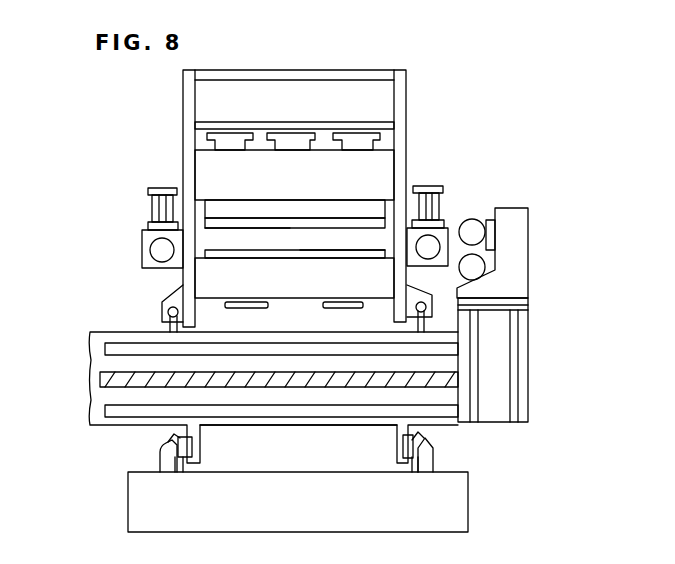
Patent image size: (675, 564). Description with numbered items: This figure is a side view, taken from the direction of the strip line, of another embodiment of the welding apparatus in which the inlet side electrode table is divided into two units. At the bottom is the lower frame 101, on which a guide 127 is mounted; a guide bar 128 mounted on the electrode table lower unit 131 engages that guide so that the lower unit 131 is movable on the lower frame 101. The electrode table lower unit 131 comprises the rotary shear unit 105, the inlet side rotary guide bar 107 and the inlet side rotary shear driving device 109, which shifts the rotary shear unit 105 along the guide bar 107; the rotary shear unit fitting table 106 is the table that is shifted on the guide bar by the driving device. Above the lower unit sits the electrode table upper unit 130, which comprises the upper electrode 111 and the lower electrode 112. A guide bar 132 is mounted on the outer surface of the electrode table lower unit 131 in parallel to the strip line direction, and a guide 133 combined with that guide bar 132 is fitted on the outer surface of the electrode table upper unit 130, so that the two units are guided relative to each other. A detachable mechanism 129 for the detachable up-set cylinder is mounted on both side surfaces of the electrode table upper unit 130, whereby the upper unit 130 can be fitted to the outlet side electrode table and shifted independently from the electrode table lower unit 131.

The lower frame 101 is at (470, 505).
The rotary shear unit 105 is at (527, 235).
The rotary shear unit fitting table 106 is at (529, 368).
The inlet side rotary guide bar 107 is at (120, 412).
The inlet side rotary shear driving device 109 is at (100, 382).
The upper electrode 111 is at (260, 227).
The lower electrode 112 is at (327, 249).
The guide 127 is at (438, 455).
The guide bar 128 is at (403, 445).
The detachable mechanism 129 is at (142, 232).
The electrode table upper unit 130 is at (470, 125).
The electrode table lower unit 131 is at (262, 427).
The guide bar 132 is at (167, 327).
The guide 133 is at (165, 297).